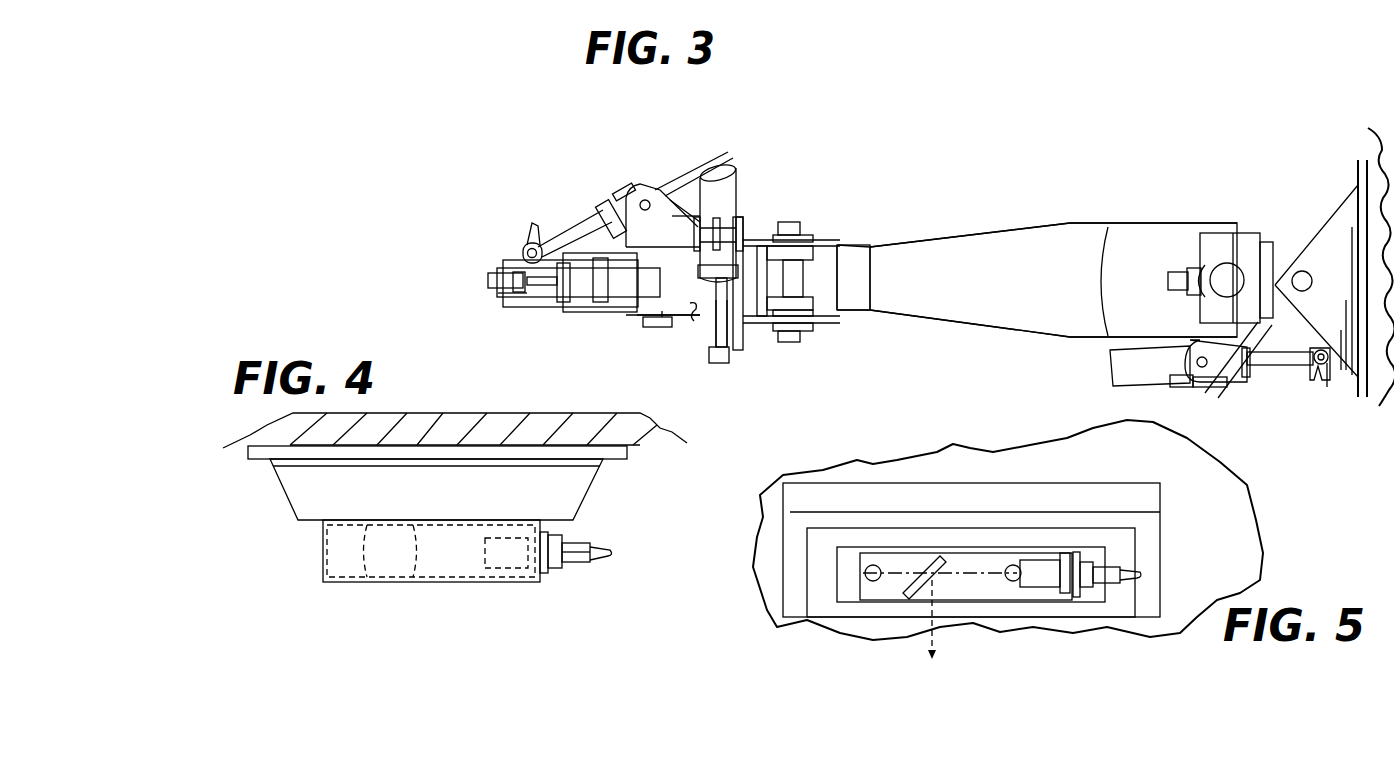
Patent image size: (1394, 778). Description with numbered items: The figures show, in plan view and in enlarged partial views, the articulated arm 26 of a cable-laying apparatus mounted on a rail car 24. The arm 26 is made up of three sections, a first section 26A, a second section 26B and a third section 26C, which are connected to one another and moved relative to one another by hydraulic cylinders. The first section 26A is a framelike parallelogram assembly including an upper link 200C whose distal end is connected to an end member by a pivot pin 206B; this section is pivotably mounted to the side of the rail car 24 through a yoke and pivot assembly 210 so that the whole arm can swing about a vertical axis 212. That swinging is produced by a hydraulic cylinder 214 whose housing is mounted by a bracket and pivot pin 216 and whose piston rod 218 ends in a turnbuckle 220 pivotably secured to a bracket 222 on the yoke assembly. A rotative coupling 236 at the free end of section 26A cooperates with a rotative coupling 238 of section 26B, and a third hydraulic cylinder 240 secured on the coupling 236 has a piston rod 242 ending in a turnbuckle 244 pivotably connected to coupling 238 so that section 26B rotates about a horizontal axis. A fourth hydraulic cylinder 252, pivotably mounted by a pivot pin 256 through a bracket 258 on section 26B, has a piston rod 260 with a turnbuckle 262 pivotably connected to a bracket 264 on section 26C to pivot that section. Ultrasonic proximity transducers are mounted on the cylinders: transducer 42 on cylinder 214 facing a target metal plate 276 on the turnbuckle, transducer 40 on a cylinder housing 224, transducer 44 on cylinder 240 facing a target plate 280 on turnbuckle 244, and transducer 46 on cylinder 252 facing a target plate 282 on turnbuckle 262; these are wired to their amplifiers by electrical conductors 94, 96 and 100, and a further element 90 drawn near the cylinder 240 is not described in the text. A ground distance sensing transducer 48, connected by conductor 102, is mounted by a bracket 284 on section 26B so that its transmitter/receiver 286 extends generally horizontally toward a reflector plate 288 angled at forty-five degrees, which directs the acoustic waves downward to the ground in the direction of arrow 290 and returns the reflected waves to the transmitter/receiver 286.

In FIG. 3, the rail car 24 is at (1358, 158).
In FIG. 3, the articulated arm 26 is at (948, 222).
In FIG. 3, the first arm section 26A is at (1030, 203).
In FIG. 3, the second arm section 26B is at (634, 313).
In FIG. 4, the second arm section 26B is at (652, 438).
In FIG. 5, the second arm section 26B is at (1143, 477).
In FIG. 3, the third arm section 26C is at (506, 302).
In FIG. 3, the proximity transducer 40 is at (1196, 272).
In FIG. 3, the proximity transducer 42 is at (1196, 388).
In FIG. 3, the proximity transducer 44 is at (745, 230).
In FIG. 3, the proximity transducer 46 is at (612, 187).
In FIG. 3, the ground distance sensing proximity transducer 48 is at (662, 317).
In FIG. 4, the ground distance sensing proximity transducer 48 is at (470, 568).
In FIG. 5, the ground distance sensing proximity transducer 48 is at (976, 552).
In FIG. 3, the cylinder 90 is at (740, 184).
In FIG. 3, the electrical conductor 94 is at (1224, 268).
In FIG. 3, the electrical conductor 96 is at (1167, 382).
In FIG. 3, the electrical conductor 100 is at (646, 200).
In FIG. 3, the electrical conductor 102 is at (692, 310).
In FIG. 4, the electrical conductor 102 is at (622, 559).
In FIG. 5, the electrical conductor 102 is at (1130, 576).
In FIG. 3, the upper link 200C is at (880, 250).
In FIG. 3, the pivot pin 206B is at (785, 278).
In FIG. 3, the yoke and pivot assembly 210 is at (1334, 220).
In FIG. 3, the vertical axis 212 is at (1302, 271).
In FIG. 3, the hydraulic cylinder 214 is at (1118, 370).
In FIG. 3, the bracket and pivot pin 216 is at (1202, 370).
In FIG. 3, the piston rod 218 is at (1262, 368).
In FIG. 3, the turnbuckle 220 is at (1318, 366).
In FIG. 3, the bracket 222 is at (1342, 384).
In FIG. 3, the cylinder housing 224 is at (1226, 290).
In FIG. 3, the rotative coupling 236 is at (754, 326).
In FIG. 3, the rotative coupling 238 is at (746, 340).
In FIG. 3, the third hydraulic cylinder 240 is at (733, 165).
In FIG. 3, the piston rod 242 is at (715, 332).
In FIG. 3, the turnbuckle 244 is at (724, 364).
In FIG. 3, the fourth hydraulic cylinder 252 is at (688, 183).
In FIG. 3, the pivot pin 256 is at (633, 152).
In FIG. 3, the bracket 258 is at (723, 164).
In FIG. 3, the piston rod 260 is at (572, 241).
In FIG. 3, the turnbuckle 262 is at (526, 242).
In FIG. 3, the bracket 264 is at (521, 253).
In FIG. 3, the target metal plate 276 is at (1282, 378).
In FIG. 3, the target plate 280 is at (706, 344).
In FIG. 3, the target plate 282 is at (530, 228).
In FIG. 4, the bracket 284 is at (582, 484).
In FIG. 5, the bracket 284 is at (1135, 500).
In FIG. 5, the ultrasonic transmitter/receiver 286 is at (1043, 588).
In FIG. 5, the reflector plate 288 is at (901, 597).
In FIG. 5, the arrow 290 is at (938, 652).